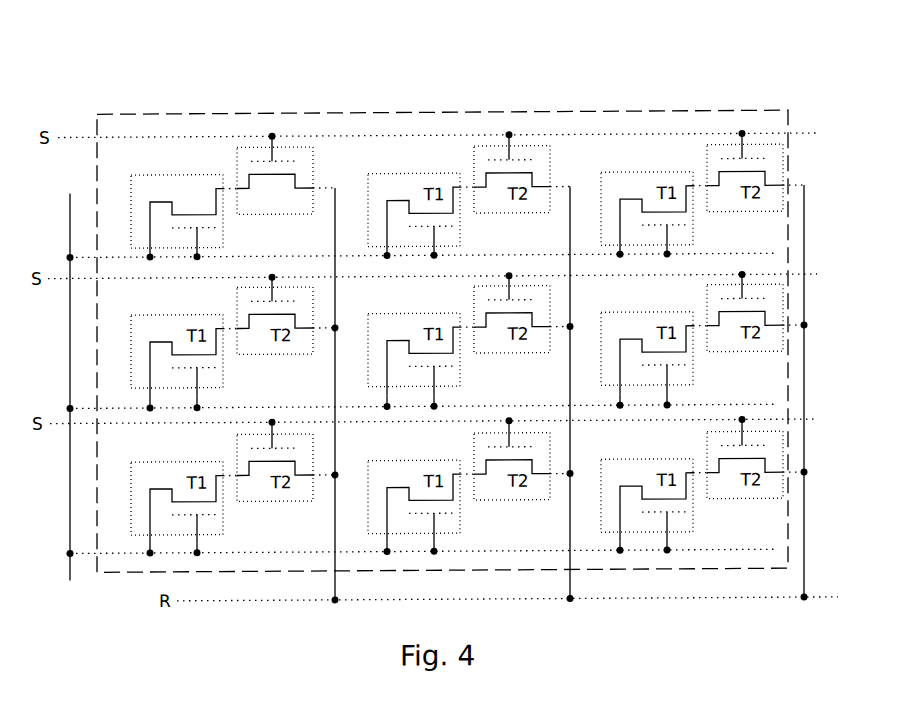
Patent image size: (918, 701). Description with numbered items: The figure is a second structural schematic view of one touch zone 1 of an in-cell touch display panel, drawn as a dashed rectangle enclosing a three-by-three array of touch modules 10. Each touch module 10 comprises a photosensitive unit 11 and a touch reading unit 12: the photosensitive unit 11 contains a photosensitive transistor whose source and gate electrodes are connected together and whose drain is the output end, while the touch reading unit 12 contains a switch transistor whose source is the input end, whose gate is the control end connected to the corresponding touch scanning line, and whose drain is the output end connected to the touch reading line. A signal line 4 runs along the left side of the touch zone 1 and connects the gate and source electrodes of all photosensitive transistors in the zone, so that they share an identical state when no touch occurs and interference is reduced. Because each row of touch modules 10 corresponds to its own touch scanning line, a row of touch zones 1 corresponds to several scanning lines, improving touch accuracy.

The touch zone 1 is at (452, 113).
The signal line 4 is at (69, 317).
The touch module 10 is at (233, 147).
The photosensitive unit 11 is at (162, 175).
The touch reading unit 12 is at (286, 142).